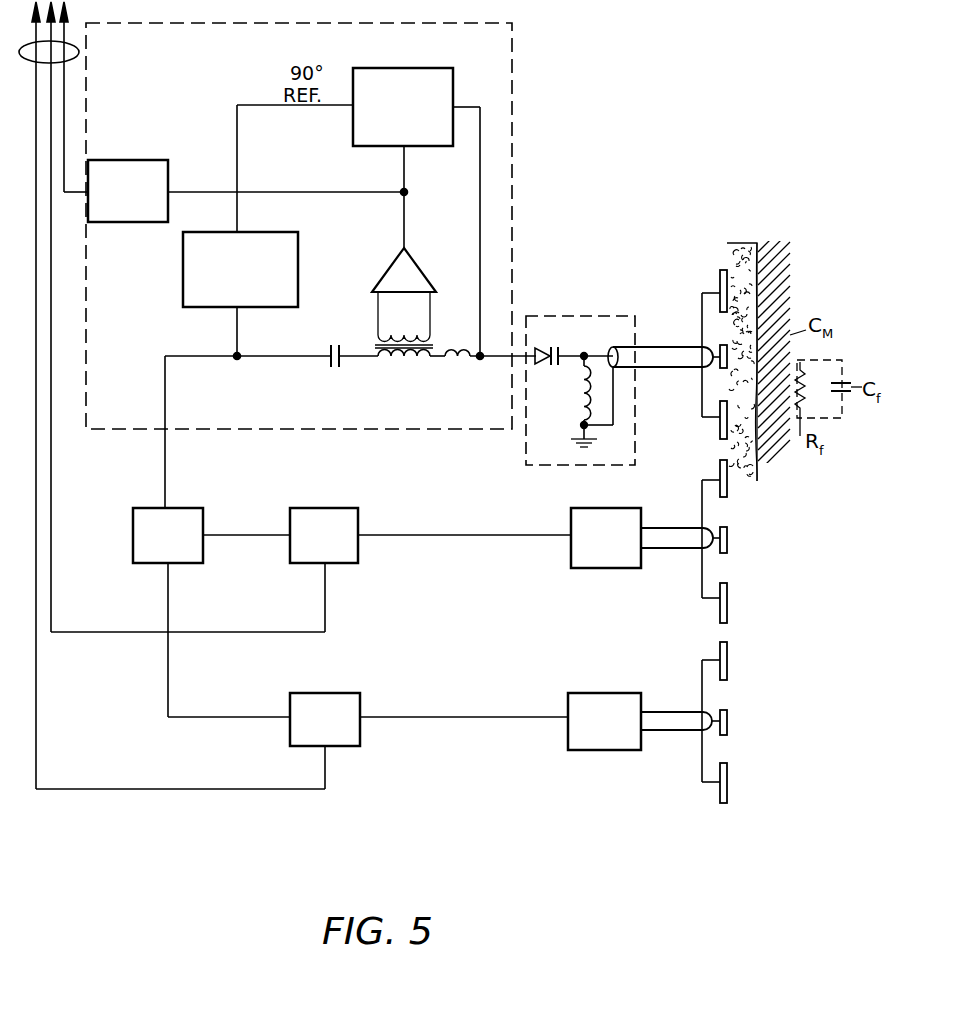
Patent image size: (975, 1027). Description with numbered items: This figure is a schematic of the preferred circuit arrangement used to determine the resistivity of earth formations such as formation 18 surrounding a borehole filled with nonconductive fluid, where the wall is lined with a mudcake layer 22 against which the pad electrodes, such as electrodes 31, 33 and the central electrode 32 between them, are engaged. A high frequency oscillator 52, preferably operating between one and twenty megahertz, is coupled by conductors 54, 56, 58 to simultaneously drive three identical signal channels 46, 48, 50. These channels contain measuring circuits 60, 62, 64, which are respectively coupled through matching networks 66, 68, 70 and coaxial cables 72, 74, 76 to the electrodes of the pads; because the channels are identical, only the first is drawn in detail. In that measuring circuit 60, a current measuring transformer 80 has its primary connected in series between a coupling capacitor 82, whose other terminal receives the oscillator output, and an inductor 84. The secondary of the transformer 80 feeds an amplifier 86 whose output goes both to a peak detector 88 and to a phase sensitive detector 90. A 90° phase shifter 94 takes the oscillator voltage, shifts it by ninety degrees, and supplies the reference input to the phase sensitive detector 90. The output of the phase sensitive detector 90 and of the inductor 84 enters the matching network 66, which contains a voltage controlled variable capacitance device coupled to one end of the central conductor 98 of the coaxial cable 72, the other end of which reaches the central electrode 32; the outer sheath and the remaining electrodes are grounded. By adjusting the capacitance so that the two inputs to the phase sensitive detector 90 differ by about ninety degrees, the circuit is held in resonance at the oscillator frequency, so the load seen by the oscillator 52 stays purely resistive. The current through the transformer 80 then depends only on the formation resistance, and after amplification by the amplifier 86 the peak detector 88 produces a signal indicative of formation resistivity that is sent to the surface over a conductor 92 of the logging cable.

The earth formation 18 is at (818, 270).
The mudcake layer 22 is at (735, 243).
The electrode 31 is at (720, 282).
The measuring electrode 32 is at (718, 365).
The electrode 33 is at (718, 424).
The signal channel 46 is at (563, 119).
The signal channel 48 is at (489, 633).
The signal channel 50 is at (475, 778).
The high frequency oscillator 52 is at (178, 508).
The conductor 54 is at (165, 455).
The conductor 56 is at (268, 536).
The conductor 58 is at (168, 592).
The measuring circuit 60 is at (345, 430).
The measuring circuit 62 is at (312, 549).
The measuring circuit 64 is at (325, 719).
The matching network 66 is at (560, 316).
The matching network 68 is at (594, 547).
The matching network 70 is at (604, 721).
The coaxial cable 72 is at (670, 347).
The coaxial cable 74 is at (690, 508).
The coaxial cable 76 is at (665, 712).
The current measuring transformer 80 is at (394, 366).
The coupling capacitor 82 is at (333, 368).
The inductor 84 is at (466, 366).
The amplifier 86 is at (423, 274).
The peak detector 88 is at (166, 131).
The phase sensitive detector 90 is at (453, 80).
The conductor 92 is at (79, 52).
The 90° phase shifter 94 is at (298, 272).
The central conductor 98 is at (598, 356).